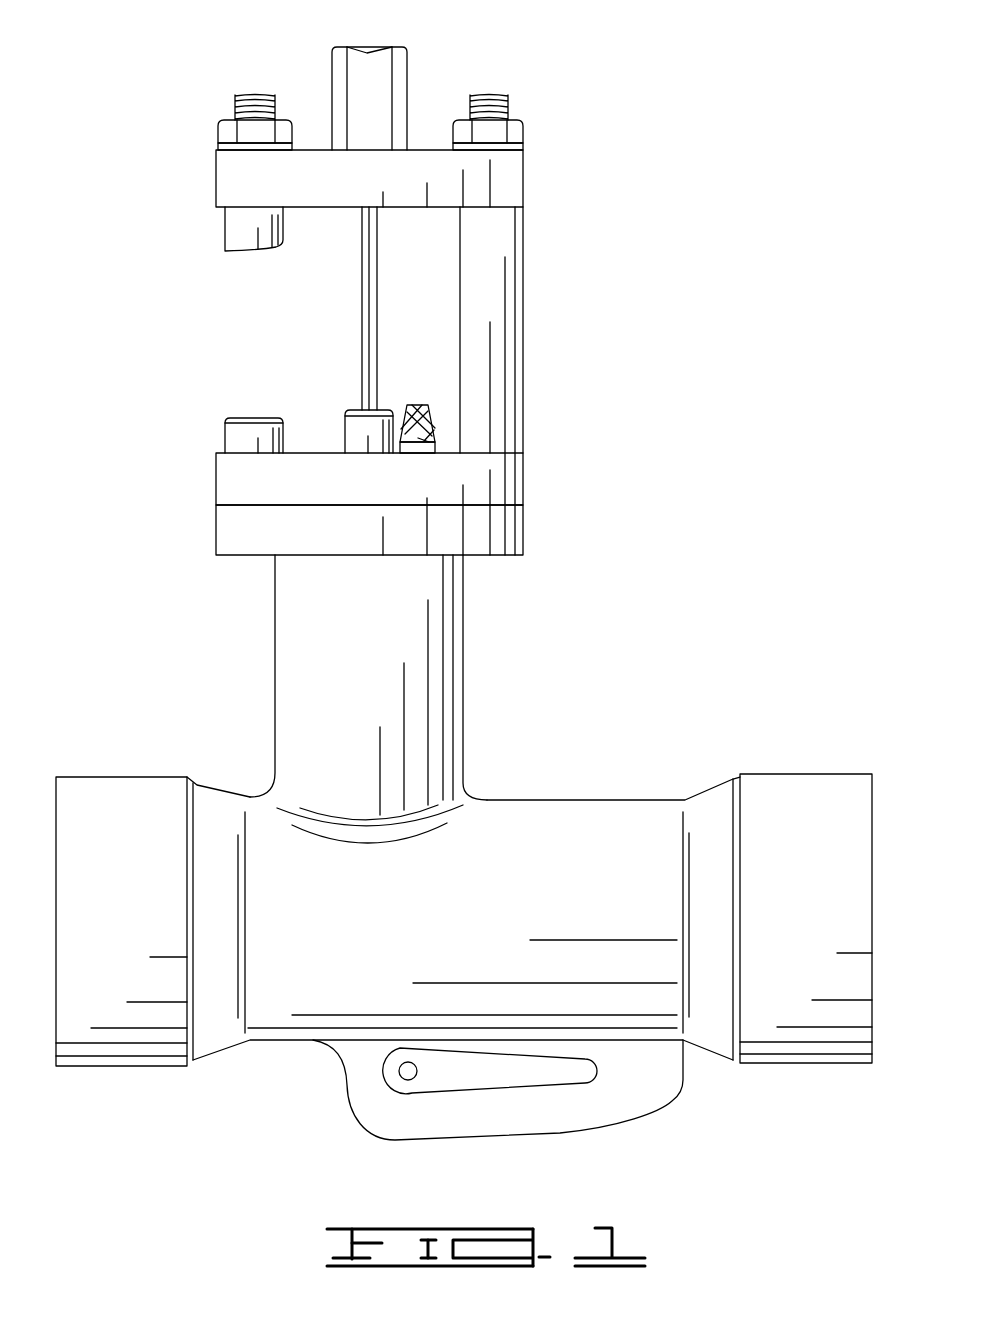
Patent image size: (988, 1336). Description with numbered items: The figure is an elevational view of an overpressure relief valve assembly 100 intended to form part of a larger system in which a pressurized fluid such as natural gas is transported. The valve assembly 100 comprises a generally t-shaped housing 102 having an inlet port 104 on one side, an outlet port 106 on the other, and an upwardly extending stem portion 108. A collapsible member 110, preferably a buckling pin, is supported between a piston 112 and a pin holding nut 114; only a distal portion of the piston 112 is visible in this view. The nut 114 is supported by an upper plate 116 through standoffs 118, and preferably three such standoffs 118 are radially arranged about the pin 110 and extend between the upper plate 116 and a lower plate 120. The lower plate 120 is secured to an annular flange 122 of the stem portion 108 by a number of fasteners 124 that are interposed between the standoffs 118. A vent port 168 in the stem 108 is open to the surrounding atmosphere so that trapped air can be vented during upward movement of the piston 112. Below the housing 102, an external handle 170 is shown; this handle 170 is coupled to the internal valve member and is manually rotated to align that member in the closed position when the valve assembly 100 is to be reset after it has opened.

The overpressure relief valve assembly 100 is at (636, 146).
The housing 102 is at (586, 764).
The inlet port 104 is at (56, 818).
The outlet port 106 is at (872, 805).
The stem portion 108 is at (285, 633).
The collapsible member 110 is at (365, 303).
The piston 112 is at (357, 423).
The pin holding nut 114 is at (367, 50).
The upper plate 116 is at (222, 175).
The standoffs 118 is at (240, 238).
The lower plate 120 is at (223, 478).
The annular flange 122 is at (227, 532).
The fasteners 124 is at (235, 418).
The vent port 168 is at (413, 403).
The external handle 170 is at (497, 1080).